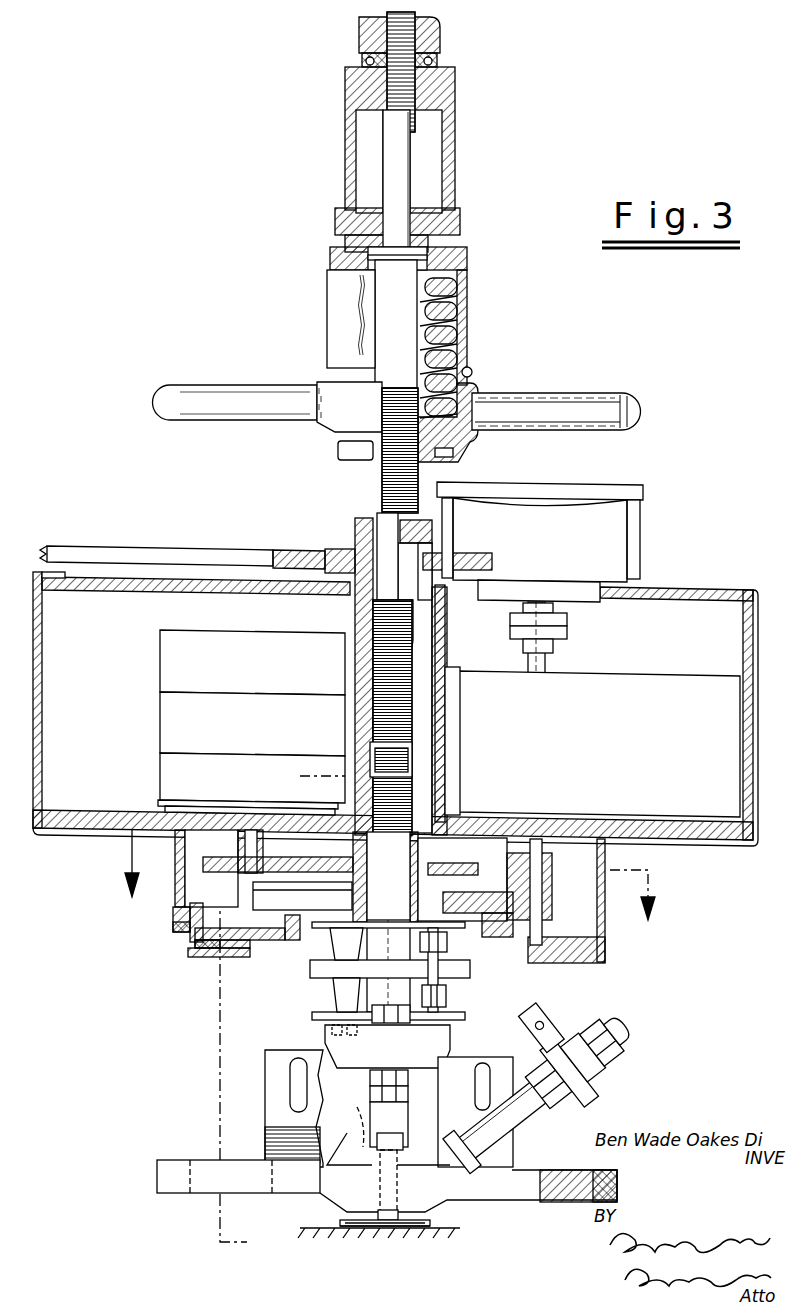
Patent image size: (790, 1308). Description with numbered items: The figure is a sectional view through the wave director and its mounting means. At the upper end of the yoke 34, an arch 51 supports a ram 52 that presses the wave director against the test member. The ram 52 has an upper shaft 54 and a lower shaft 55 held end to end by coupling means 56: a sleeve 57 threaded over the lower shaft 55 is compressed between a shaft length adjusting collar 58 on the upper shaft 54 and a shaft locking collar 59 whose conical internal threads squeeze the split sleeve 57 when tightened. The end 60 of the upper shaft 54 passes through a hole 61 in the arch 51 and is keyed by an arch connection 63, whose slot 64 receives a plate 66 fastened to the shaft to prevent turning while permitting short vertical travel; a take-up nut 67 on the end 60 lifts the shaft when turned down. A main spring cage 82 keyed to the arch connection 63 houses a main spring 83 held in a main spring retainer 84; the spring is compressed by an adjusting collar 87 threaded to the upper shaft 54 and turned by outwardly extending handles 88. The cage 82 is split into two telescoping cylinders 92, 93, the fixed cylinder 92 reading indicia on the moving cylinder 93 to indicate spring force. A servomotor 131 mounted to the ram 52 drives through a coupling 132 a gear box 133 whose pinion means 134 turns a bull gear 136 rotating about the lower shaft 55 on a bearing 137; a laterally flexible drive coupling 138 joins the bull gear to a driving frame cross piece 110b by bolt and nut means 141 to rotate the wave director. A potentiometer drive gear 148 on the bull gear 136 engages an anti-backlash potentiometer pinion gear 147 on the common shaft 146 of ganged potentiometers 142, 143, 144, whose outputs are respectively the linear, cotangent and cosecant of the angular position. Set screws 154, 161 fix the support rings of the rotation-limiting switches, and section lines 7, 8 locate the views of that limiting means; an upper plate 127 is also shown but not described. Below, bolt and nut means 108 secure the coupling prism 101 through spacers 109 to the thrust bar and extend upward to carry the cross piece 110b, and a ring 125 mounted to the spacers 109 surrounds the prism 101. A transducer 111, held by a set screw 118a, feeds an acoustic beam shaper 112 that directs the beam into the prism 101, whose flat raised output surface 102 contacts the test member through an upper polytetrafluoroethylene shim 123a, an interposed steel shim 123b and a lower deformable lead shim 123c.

The take-up nut 67 is at (444, 45).
The arch 51 is at (462, 120).
The yoke 34 is at (458, 142).
The end of upper shaft 60 is at (408, 164).
The hole 61 is at (410, 212).
The arch connection 63 is at (462, 225).
The plate 66 is at (345, 240).
The slot 64 is at (385, 262).
The upper shaft 54 is at (408, 330).
The main spring retainer 84 is at (468, 262).
The main spring cage 82 is at (556, 272).
The fixed cylinder 92 is at (468, 300).
The main spring 83 is at (458, 328).
The movable cylinder 93 is at (470, 368).
The handles 88 is at (592, 393).
The adjusting collar 87 is at (470, 438).
The ram 52 is at (530, 262).
The coupling means 56 is at (343, 512).
The shaft length adjusting collar 58 is at (372, 520).
The shaft locking collar 59 is at (340, 548).
The top plate 127 is at (185, 552).
The servomotor 131 is at (548, 542).
The coupling 132 is at (572, 623).
The gear box 133 is at (558, 749).
The cosecant potentiometer 144 is at (278, 674).
The cotangent potentiometer 143 is at (273, 736).
The linear potentiometer 142 is at (271, 790).
The sleeve 57 is at (358, 722).
The section line 7 is at (282, 1011).
The section line 8 is at (388, 889).
The common shaft 146 is at (243, 847).
The potentiometer pinion gear 147 is at (218, 872).
The bearing 137 is at (412, 878).
The lower shaft 55 is at (400, 910).
The potentiometer drive gear 148 is at (455, 860).
The pinion means 134 is at (554, 858).
The set screw 154 is at (180, 940).
The set screw 161 is at (215, 948).
The laterally flexible drive coupling 138 is at (300, 984).
The bolt and nut means 141 is at (378, 1000).
The bull gear 136 is at (472, 930).
The driving frame cross piece 110b is at (443, 1045).
The spacers 109 is at (410, 1084).
The bolt and nut means 108 is at (389, 1108).
The set screw 118a is at (410, 1112).
The transducer 111 is at (600, 1108).
The acoustic beam shaper 112 is at (520, 1135).
The ring 125 is at (560, 1170).
The coupling prism 101 is at (450, 1215).
The output surface 102 is at (395, 1227).
The polytetrafluoroethylene shim 123a is at (380, 1227).
The steel shim 123b is at (345, 1226).
The lead shim 123c is at (350, 1228).